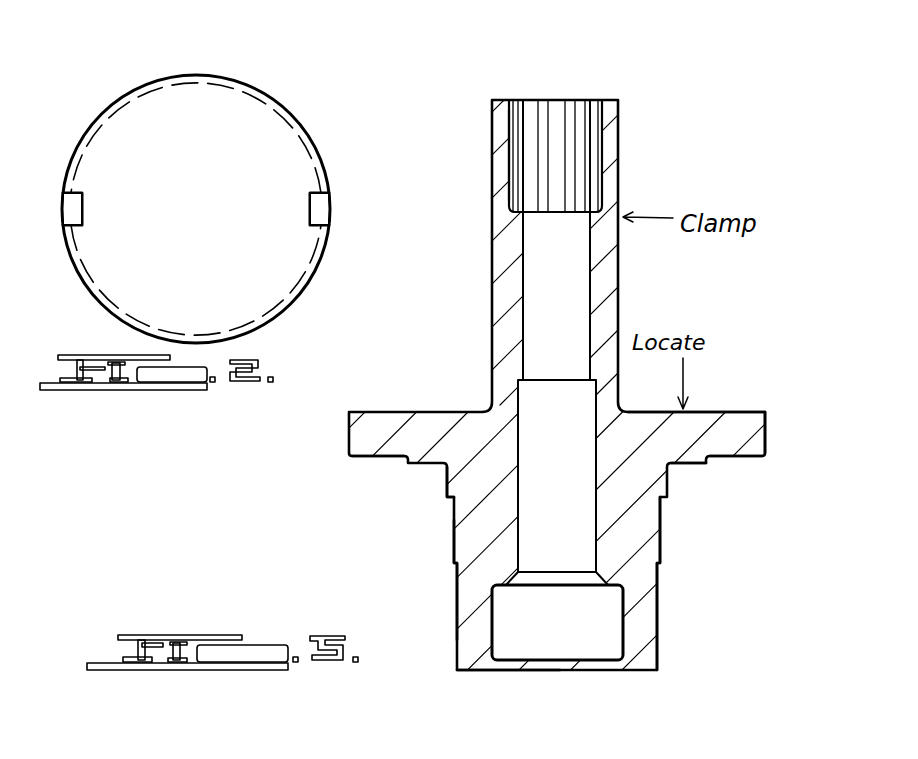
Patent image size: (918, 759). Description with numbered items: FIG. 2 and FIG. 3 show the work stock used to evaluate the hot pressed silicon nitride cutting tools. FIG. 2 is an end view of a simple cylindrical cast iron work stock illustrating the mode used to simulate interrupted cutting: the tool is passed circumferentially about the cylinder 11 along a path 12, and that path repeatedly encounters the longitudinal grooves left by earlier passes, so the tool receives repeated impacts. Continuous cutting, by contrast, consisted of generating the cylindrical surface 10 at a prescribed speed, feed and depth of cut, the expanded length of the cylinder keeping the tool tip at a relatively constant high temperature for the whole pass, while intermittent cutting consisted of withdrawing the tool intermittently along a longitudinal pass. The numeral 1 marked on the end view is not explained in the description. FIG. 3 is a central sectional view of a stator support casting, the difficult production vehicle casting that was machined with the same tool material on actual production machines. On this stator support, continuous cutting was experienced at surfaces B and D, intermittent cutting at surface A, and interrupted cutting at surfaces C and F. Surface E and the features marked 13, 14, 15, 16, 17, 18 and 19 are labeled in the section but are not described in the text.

In FIG. 2, the collet ring 1 is at (261, 97).
In FIG. 3, the cylindrical surface 10 is at (618, 263).
In FIG. 3, the cylinder 11 is at (590, 281).
In FIG. 3, the path 12 is at (595, 118).
In FIG. 3, the flange top locating face 13 is at (715, 410).
In FIG. 3, the flange bottom face 14 is at (748, 460).
In FIG. 3, the flange inner bottom face 15 is at (692, 465).
In FIG. 3, the flange outer edge 16 is at (766, 422).
In FIG. 3, the lower cylindrical surface 17 is at (658, 615).
In FIG. 3, the intermediate cylindrical surface 18 is at (659, 542).
In FIG. 3, the shoulder 19 is at (450, 487).
In FIG. 3, the surface A is at (463, 683).
In FIG. 3, the surface B is at (445, 595).
In FIG. 3, the surface C is at (373, 470).
In FIG. 3, the surface D is at (613, 622).
In FIG. 3, the bore surface E is at (536, 352).
In FIG. 3, the surface F is at (517, 118).